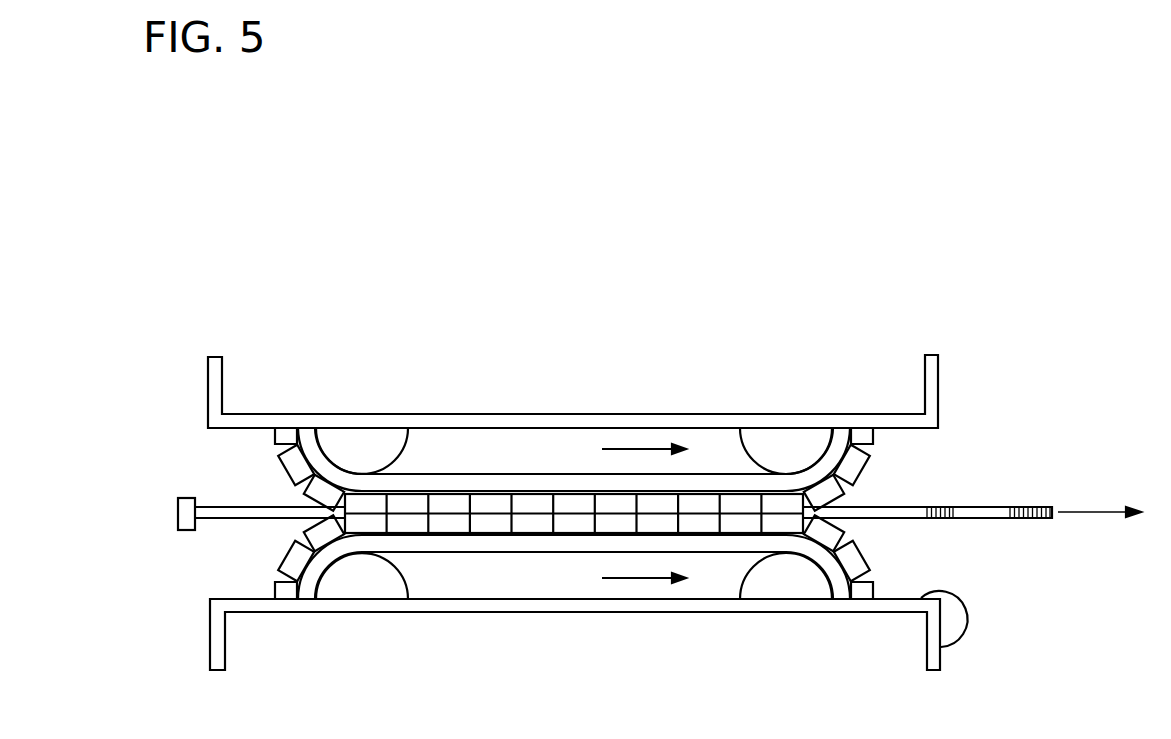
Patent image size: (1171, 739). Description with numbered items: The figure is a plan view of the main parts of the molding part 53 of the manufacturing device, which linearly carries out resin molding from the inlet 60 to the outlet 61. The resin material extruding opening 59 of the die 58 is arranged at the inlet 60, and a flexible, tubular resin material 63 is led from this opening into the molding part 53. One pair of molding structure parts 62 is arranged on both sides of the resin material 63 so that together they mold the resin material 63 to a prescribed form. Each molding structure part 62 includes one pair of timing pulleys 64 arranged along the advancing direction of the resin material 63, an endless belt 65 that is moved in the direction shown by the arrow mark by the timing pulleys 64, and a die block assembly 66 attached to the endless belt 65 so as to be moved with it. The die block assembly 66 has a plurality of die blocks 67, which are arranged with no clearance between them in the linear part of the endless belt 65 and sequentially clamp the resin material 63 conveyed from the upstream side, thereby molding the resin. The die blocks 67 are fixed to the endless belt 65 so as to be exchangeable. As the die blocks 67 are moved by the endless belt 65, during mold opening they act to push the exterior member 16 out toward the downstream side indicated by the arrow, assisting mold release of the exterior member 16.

The molding part 53 is at (800, 240).
The inlet 60 is at (215, 443).
The outlet 61 is at (921, 448).
The molding structure parts 62 is at (553, 450).
The resin material 63 is at (252, 517).
The timing pulleys 64 is at (358, 442).
The endless belt 65 is at (448, 485).
The die block assembly 66 is at (867, 472).
The die blocks 67 is at (535, 495).
The exterior member 16 is at (978, 511).
The die 58 is at (200, 547).
The resin material extruding opening 59 is at (178, 505).